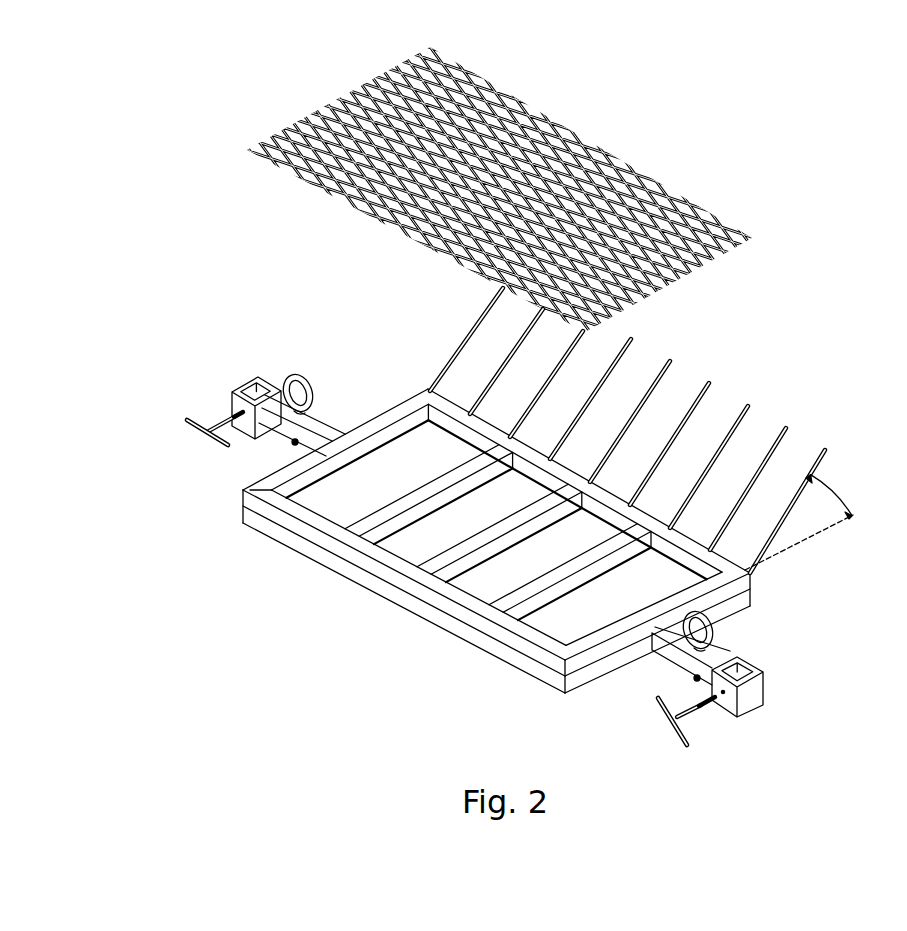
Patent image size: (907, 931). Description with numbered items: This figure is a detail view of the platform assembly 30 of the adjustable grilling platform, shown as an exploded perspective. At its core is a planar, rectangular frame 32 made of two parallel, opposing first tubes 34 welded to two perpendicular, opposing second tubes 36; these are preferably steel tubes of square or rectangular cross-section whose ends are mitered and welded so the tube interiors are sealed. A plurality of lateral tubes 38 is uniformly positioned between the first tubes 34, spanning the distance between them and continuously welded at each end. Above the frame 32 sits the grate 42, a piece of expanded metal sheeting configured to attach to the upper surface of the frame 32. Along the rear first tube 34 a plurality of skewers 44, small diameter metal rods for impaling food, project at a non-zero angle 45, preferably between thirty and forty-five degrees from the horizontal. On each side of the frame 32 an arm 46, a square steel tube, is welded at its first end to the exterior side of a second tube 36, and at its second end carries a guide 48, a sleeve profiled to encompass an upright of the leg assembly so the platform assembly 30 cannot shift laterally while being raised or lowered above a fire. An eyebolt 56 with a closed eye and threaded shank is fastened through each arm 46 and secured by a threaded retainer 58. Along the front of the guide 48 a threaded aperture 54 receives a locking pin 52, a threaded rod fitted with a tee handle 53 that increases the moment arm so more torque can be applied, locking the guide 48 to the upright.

The platform assembly 30 is at (200, 218).
The frame 32 is at (491, 528).
The first tubes 34 is at (447, 401).
The second tubes 36 is at (395, 410).
The lateral tubes 38 is at (350, 523).
The grate 42 is at (588, 147).
The skewers 44 is at (818, 454).
The angle 45 is at (843, 492).
The arm 46 is at (282, 427).
The guide 48 is at (248, 378).
The locking pin 52 is at (222, 423).
The tee handle 53 is at (190, 430).
The threaded aperture 54 is at (725, 694).
The eyebolt 56 is at (302, 380).
The threaded retainer 58 is at (693, 678).